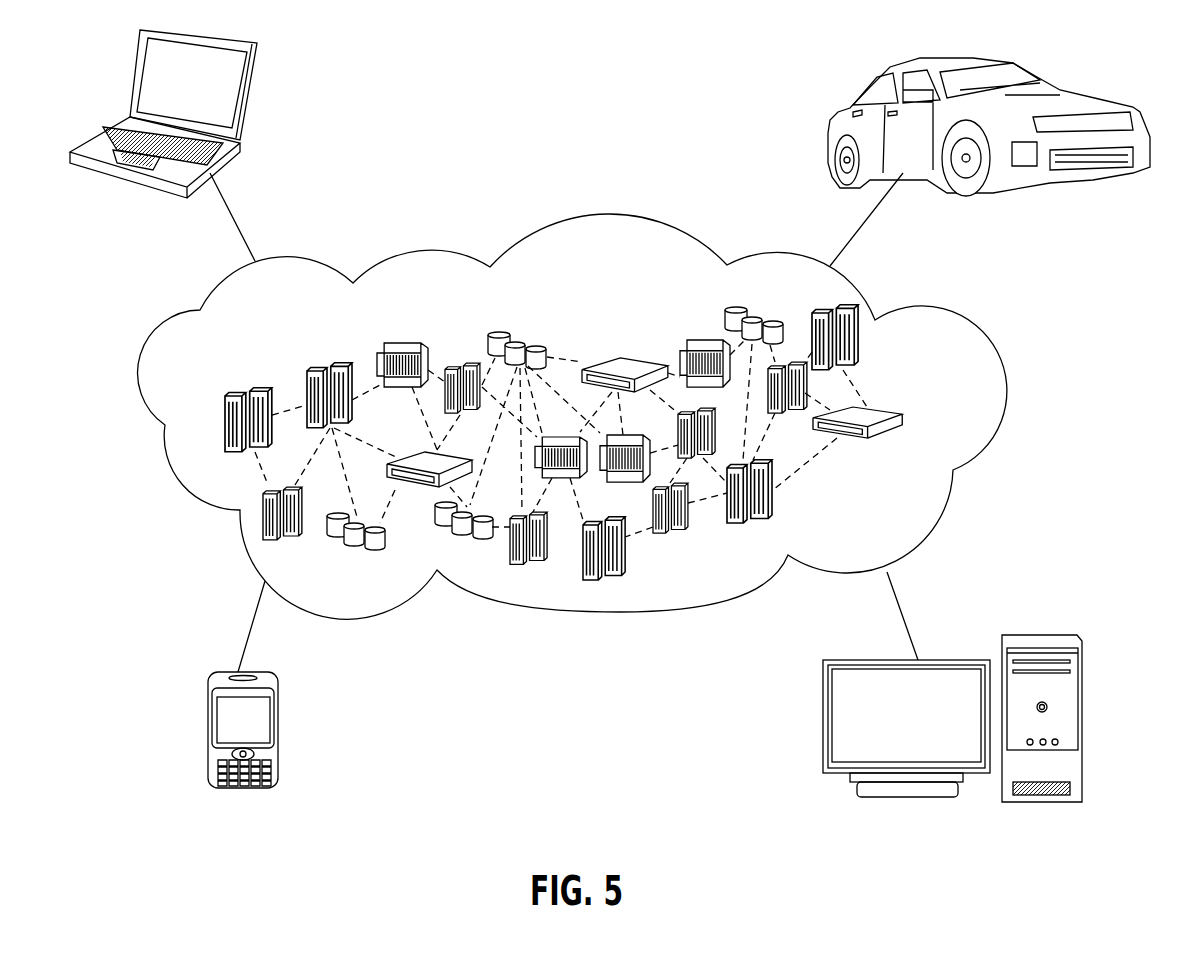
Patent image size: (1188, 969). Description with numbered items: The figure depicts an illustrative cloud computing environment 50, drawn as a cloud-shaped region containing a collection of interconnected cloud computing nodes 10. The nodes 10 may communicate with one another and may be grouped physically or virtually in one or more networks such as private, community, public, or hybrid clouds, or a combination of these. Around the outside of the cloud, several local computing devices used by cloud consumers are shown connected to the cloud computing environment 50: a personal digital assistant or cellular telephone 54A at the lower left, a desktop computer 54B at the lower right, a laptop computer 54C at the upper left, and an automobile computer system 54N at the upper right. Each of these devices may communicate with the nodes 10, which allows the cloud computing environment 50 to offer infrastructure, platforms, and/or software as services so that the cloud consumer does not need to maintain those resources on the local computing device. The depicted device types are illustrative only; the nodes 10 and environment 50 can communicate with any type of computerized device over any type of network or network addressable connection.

The cloud computing nodes 10 is at (936, 420).
The cloud computing environment 50 is at (963, 333).
The personal digital assistant (PDA) or cellular telephone 54A is at (208, 737).
The desktop computer 54B is at (1047, 635).
The laptop computer 54C is at (248, 100).
The automobile computer system 54N is at (835, 110).